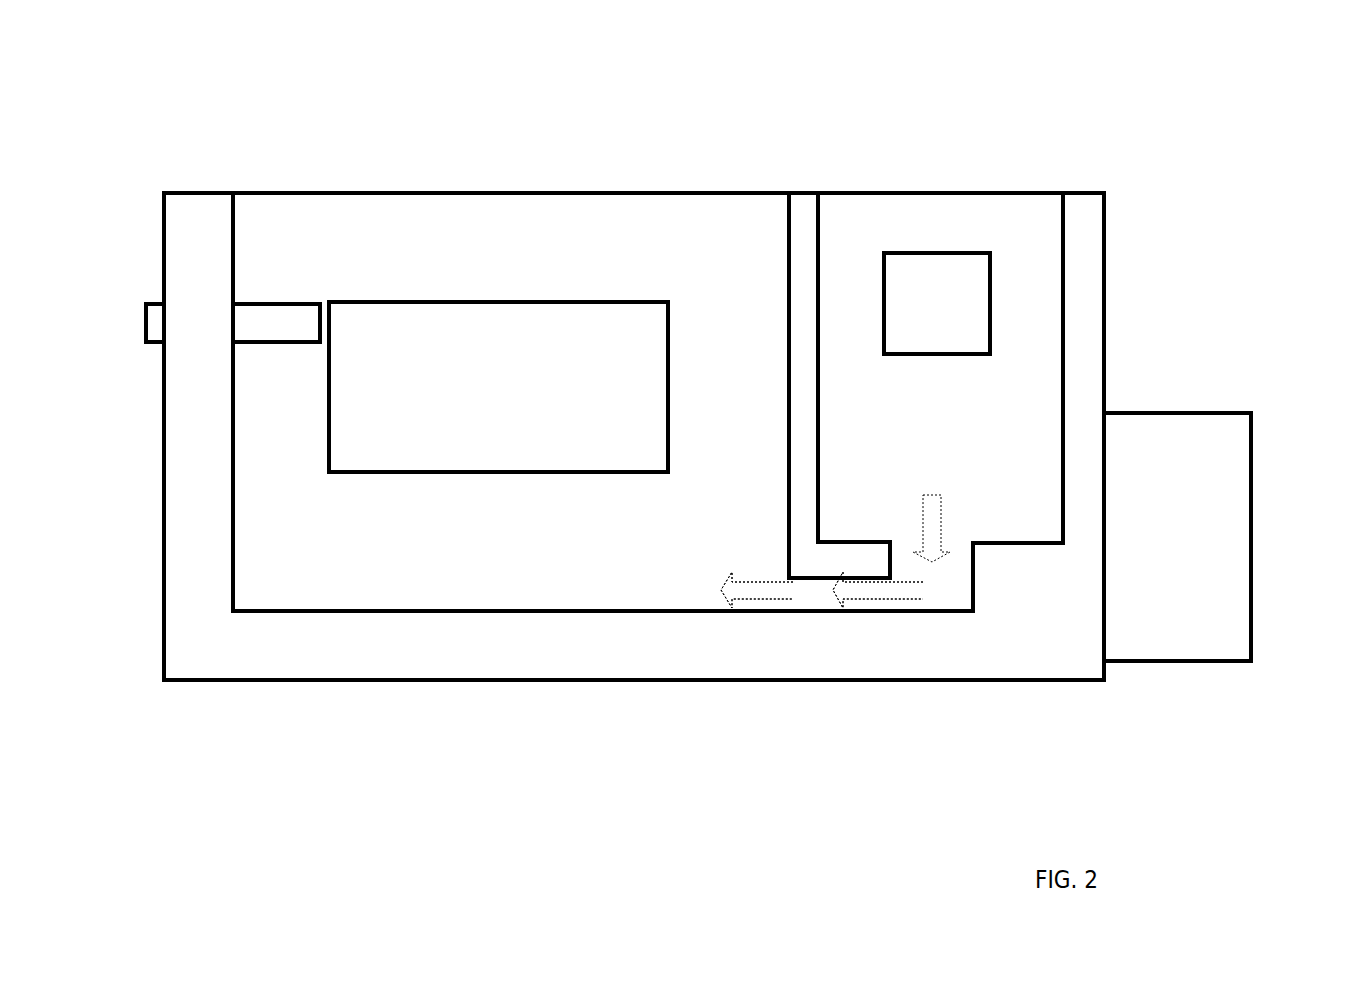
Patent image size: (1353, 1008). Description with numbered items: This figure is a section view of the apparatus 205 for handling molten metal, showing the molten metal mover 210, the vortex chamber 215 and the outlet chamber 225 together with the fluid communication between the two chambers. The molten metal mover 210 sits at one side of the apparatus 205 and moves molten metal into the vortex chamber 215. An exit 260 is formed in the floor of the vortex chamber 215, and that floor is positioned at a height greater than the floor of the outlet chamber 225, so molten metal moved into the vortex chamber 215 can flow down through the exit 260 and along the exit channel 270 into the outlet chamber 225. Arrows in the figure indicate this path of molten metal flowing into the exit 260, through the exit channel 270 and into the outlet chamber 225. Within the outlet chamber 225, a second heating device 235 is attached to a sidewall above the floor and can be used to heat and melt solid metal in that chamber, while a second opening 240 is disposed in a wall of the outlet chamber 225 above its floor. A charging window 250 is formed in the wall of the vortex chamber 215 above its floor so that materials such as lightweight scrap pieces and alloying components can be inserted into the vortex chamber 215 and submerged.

The apparatus 205 is at (175, 102).
The molten metal mover 210 is at (1233, 477).
The vortex chamber 215 is at (868, 385).
The outlet chamber 225 is at (648, 402).
The second heating device 235 is at (267, 320).
The second opening 240 is at (449, 350).
The charging window 250 is at (940, 260).
The exit 260 is at (955, 593).
The exit channel 270 is at (805, 590).